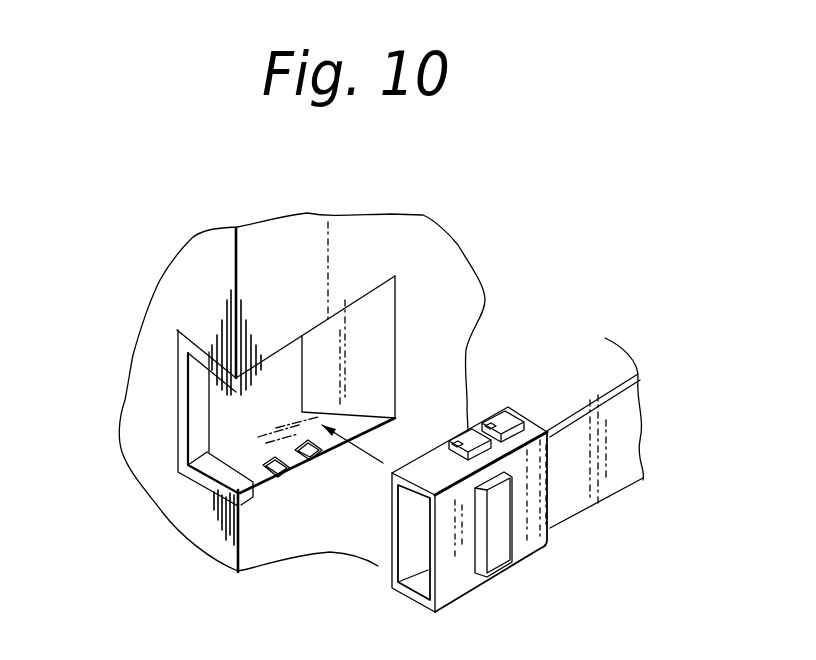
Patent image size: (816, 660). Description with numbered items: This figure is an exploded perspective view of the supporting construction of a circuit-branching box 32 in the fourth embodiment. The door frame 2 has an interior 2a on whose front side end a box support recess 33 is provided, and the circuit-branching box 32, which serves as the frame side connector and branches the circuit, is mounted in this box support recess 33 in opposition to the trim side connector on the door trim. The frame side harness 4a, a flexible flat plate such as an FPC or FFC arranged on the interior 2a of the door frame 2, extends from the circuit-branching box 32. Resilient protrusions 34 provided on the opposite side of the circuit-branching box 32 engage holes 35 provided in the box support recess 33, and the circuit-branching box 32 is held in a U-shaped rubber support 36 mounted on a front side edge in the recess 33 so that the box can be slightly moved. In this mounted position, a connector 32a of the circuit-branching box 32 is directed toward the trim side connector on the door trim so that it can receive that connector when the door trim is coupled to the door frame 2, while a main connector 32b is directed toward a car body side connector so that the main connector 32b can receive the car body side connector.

The door frame 2 is at (198, 283).
The interior of the door frame 2a is at (411, 252).
The box support recess 33 is at (228, 408).
The U-shaped rubber support 36 is at (195, 440).
The holes 35 is at (283, 476).
The resilient protrusions 34 is at (505, 417).
The frame side harness 4a is at (620, 402).
The circuit-branching box 32 is at (458, 568).
The connector 32a is at (502, 520).
The main connector 32b is at (412, 535).